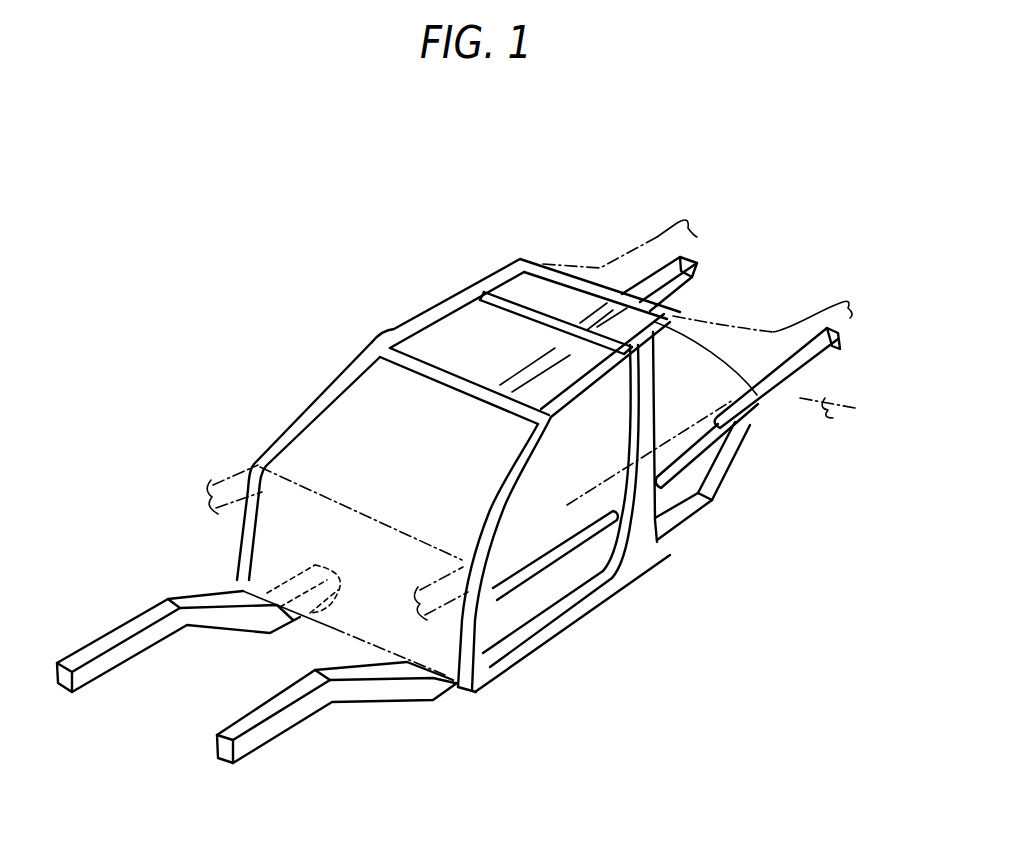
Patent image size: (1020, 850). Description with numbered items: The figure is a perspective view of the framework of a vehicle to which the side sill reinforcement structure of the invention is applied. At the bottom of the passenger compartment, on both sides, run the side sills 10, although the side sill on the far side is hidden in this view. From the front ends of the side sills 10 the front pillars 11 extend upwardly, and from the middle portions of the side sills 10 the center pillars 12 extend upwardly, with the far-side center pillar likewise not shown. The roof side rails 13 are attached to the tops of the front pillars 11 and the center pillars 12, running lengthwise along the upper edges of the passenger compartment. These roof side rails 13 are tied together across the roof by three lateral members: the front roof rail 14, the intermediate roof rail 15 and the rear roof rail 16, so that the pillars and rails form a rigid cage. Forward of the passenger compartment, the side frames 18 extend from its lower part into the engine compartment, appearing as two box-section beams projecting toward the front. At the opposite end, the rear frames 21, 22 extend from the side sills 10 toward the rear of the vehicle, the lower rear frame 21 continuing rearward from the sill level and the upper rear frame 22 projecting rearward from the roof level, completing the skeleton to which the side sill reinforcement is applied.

The side sill 10 is at (595, 609).
The front pillar 11 is at (297, 412).
The center pillar 12 is at (653, 507).
The roof side rail 13 is at (418, 305).
The roof rail 14 is at (430, 377).
The roof rail 15 is at (508, 318).
The roof rail 16 is at (580, 271).
The side frame 18 is at (125, 622).
The rear frame 21 is at (777, 403).
The rear frame 22 is at (661, 262).